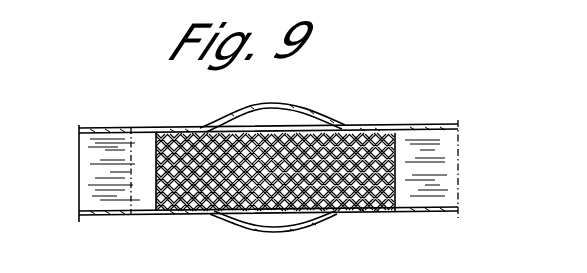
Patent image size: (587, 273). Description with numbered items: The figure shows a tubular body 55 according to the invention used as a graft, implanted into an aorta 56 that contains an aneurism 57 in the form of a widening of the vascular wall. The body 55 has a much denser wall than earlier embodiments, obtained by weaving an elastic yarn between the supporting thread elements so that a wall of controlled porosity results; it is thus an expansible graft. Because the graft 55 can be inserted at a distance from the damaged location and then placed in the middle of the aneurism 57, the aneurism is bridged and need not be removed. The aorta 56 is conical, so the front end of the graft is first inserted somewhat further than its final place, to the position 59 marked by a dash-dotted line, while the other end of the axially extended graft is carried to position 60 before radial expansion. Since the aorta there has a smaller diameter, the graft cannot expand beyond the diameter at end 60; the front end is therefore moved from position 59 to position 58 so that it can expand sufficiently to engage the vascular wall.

The tubular body 55 is at (197, 133).
The aorta 56 is at (92, 130).
The aneurism 57 is at (326, 118).
The position 58 is at (155, 135).
The position 59 is at (127, 142).
The position 60 is at (397, 137).